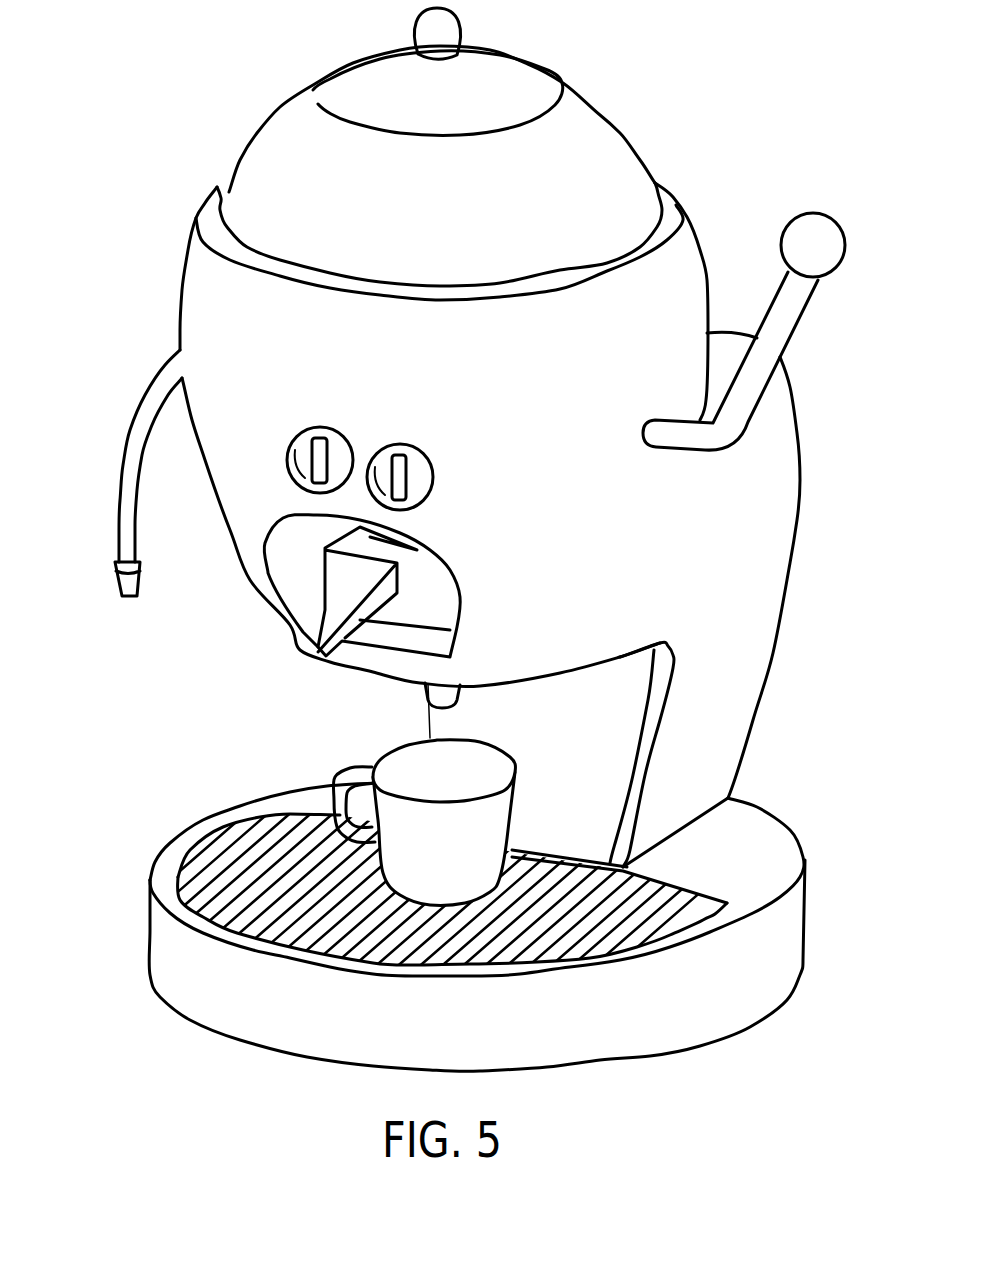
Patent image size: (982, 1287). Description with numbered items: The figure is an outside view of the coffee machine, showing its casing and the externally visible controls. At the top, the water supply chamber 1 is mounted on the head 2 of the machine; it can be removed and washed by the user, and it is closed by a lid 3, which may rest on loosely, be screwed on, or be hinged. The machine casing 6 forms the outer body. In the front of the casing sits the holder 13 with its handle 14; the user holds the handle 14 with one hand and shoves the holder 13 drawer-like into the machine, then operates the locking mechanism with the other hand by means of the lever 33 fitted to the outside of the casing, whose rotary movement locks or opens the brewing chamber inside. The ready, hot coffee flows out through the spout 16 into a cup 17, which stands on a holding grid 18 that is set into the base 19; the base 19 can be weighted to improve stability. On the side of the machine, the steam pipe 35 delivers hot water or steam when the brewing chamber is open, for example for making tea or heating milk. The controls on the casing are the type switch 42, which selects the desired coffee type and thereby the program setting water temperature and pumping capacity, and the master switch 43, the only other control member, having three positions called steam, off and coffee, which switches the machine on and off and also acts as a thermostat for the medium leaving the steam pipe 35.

The water supply chamber 1 is at (606, 146).
The head 2 is at (160, 280).
The lid 3 is at (515, 80).
The housing body 6 is at (808, 562).
The holder 13 is at (340, 574).
The handle 14 is at (350, 617).
The spout 16 is at (453, 695).
The cup 17 is at (497, 817).
The holding grid 18 is at (217, 867).
The base 19 is at (783, 943).
The lever 33 is at (780, 333).
The steam pipe 35 is at (125, 488).
The type switch 42 is at (337, 455).
The master switch 43 is at (418, 470).